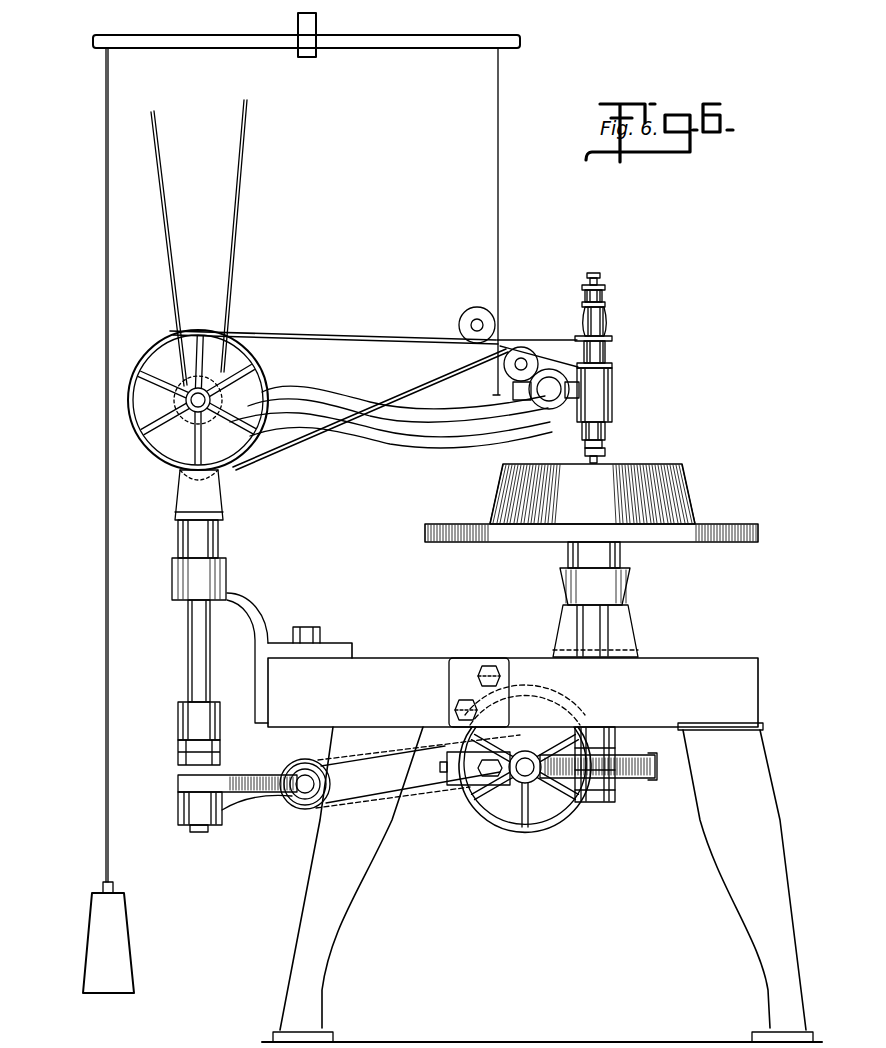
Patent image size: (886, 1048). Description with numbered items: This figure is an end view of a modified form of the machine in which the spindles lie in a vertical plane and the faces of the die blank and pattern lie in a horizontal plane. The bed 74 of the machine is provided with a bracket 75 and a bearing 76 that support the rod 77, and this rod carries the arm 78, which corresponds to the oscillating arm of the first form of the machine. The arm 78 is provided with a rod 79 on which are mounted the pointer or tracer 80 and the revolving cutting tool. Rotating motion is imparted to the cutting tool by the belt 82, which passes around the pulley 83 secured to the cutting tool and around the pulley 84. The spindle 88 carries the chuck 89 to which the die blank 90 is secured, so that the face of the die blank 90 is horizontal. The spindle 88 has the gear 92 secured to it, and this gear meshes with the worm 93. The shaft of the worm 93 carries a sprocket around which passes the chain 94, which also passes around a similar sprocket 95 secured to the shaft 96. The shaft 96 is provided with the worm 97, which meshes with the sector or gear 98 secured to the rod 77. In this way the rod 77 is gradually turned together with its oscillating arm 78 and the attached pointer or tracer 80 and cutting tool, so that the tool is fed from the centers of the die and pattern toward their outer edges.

The bed 74 is at (542, 834).
The bracket 75 is at (258, 618).
The bearing 76 is at (221, 812).
The rod 77 is at (189, 642).
The arm 78 is at (381, 425).
The rod 79 is at (549, 394).
The pointer or tracer 80 is at (606, 452).
The belt 82 is at (371, 341).
The pulley 83 is at (607, 340).
The pulley 84 is at (172, 459).
The spindle 88 is at (612, 634).
The chuck 89 is at (710, 544).
The die blank 90 is at (592, 494).
The gear 92 is at (648, 776).
The worm 93 is at (522, 773).
The chain 94 is at (432, 801).
The sprocket 95 is at (304, 792).
The shaft 96 is at (290, 796).
The worm 97 is at (293, 772).
The sector or gear 98 is at (256, 786).